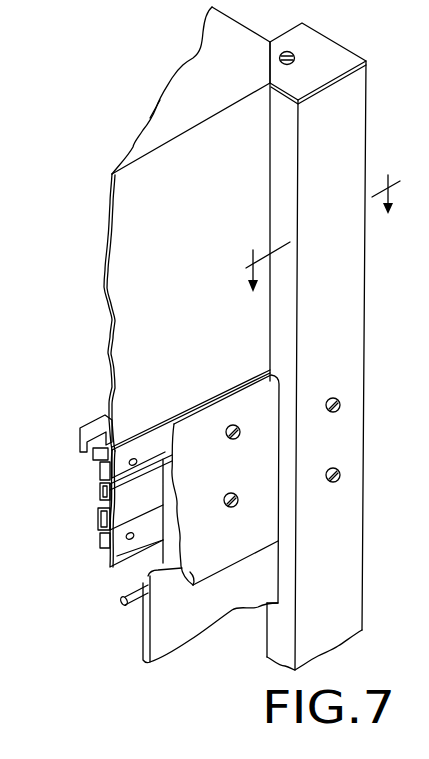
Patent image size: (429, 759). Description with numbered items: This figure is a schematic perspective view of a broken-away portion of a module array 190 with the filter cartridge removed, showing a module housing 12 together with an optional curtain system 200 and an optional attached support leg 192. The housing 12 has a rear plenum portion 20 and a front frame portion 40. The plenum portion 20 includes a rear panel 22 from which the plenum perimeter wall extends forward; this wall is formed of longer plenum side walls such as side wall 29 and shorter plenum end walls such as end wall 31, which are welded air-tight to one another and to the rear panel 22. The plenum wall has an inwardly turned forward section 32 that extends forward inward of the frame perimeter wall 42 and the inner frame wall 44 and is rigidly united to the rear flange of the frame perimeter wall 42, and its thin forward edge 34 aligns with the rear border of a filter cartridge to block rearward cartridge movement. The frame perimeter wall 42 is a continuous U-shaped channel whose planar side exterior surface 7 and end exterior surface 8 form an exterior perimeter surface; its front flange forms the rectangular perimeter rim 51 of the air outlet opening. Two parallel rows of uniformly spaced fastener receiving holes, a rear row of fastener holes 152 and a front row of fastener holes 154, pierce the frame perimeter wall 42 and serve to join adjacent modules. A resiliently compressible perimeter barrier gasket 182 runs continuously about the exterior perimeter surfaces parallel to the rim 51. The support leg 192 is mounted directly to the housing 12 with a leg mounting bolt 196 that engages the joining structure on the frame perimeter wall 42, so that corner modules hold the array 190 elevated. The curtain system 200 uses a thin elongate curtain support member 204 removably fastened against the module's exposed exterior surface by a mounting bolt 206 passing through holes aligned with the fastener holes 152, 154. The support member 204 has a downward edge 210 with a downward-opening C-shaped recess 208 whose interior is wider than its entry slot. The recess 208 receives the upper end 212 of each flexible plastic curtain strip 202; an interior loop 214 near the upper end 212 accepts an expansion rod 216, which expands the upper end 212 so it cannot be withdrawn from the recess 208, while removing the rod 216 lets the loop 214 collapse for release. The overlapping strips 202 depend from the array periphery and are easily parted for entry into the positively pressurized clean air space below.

The side exterior surface 7 is at (126, 497).
The end exterior surface 8 is at (323, 253).
The module housing 12 is at (108, 203).
The plenum portion 20 is at (108, 338).
The rear panel 22 is at (186, 68).
The plenum side wall 29 is at (166, 267).
The plenum end wall 31 is at (246, 26).
The forward section 32 is at (96, 422).
The forward edge 34 is at (90, 453).
The frame portion 40 is at (210, 404).
The frame perimeter wall 42 is at (96, 540).
The inner frame wall 44 is at (96, 478).
The perimeter rim 51 is at (98, 566).
The rear row fastener holes 152 is at (137, 457).
The front row fastener holes 154 is at (128, 545).
The perimeter barrier gasket 182 is at (98, 508).
The module array 190 is at (148, 109).
The support leg 192 is at (362, 318).
The leg mounting bolt 196 is at (341, 407).
The curtain system 200 is at (174, 633).
The curtain strip 202 is at (234, 610).
The curtain support member 204 is at (257, 489).
The mounting bolt 206 is at (233, 442).
The C-shaped recess 208 is at (190, 578).
The downward edge 210 is at (260, 550).
The upper end 212 is at (170, 583).
The interior loop 214 is at (134, 612).
The expansion rod 216 is at (127, 606).